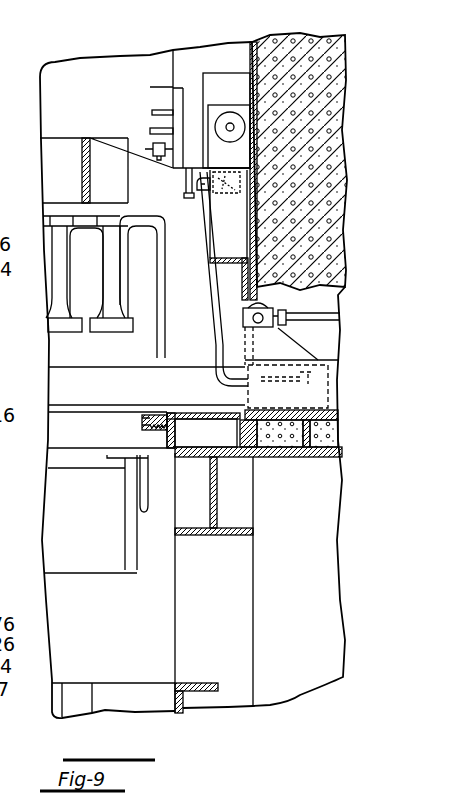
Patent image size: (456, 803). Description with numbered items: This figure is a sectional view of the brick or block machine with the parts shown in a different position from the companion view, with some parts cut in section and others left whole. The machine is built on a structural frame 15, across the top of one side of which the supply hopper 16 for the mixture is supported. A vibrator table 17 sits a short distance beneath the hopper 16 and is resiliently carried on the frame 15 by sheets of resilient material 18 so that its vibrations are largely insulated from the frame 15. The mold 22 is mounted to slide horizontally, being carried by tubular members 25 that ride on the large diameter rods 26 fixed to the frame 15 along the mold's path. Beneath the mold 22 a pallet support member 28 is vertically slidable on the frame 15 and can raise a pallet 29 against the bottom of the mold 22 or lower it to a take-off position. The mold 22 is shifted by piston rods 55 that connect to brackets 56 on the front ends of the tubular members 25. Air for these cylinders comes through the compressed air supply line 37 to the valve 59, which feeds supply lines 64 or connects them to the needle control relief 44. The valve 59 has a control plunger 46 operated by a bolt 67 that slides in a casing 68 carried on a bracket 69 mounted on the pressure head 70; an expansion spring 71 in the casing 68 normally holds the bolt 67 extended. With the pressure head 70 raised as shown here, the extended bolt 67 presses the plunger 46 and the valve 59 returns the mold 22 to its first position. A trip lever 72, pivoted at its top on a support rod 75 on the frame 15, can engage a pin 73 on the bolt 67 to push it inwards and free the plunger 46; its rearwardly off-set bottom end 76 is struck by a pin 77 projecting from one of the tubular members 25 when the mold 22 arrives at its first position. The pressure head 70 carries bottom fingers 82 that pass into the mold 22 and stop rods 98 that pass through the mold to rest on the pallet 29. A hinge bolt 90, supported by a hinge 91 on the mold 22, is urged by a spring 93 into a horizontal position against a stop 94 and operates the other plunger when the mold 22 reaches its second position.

The structural frame 15 is at (258, 615).
The supply hopper 16 is at (352, 297).
The vibrator table 17 is at (342, 452).
The sheets of resilient material 18 is at (240, 460).
The mold 22 is at (352, 422).
The tubular members 25 is at (340, 366).
The large diameter rods 26 is at (50, 385).
The pallet support member 28 is at (122, 585).
The pallet 29 is at (50, 450).
The compressed air supply line 37 is at (161, 110).
The needle control relief 44 is at (148, 145).
The control plunger 46 is at (187, 199).
The piston rods 55 is at (342, 316).
The brackets 56 is at (280, 347).
The valve 59 is at (182, 90).
The supply lines 64 is at (150, 130).
The bolt 67 is at (195, 185).
The casing 68 is at (224, 194).
The bracket 69 is at (108, 152).
The pressure head 70 is at (87, 130).
The expansion spring 71 is at (243, 200).
The trip lever 72 is at (214, 305).
The pin 73 is at (222, 163).
The support rod 75 is at (232, 113).
The bottom end of trip lever 76 is at (330, 383).
The pin 77 is at (286, 388).
The bottom fingers 82 is at (60, 334).
The hinge bolt 90 is at (142, 422).
The hinge 91 is at (170, 415).
The spring 93 is at (155, 434).
The stop 94 is at (158, 412).
The stop rods 98 is at (158, 277).